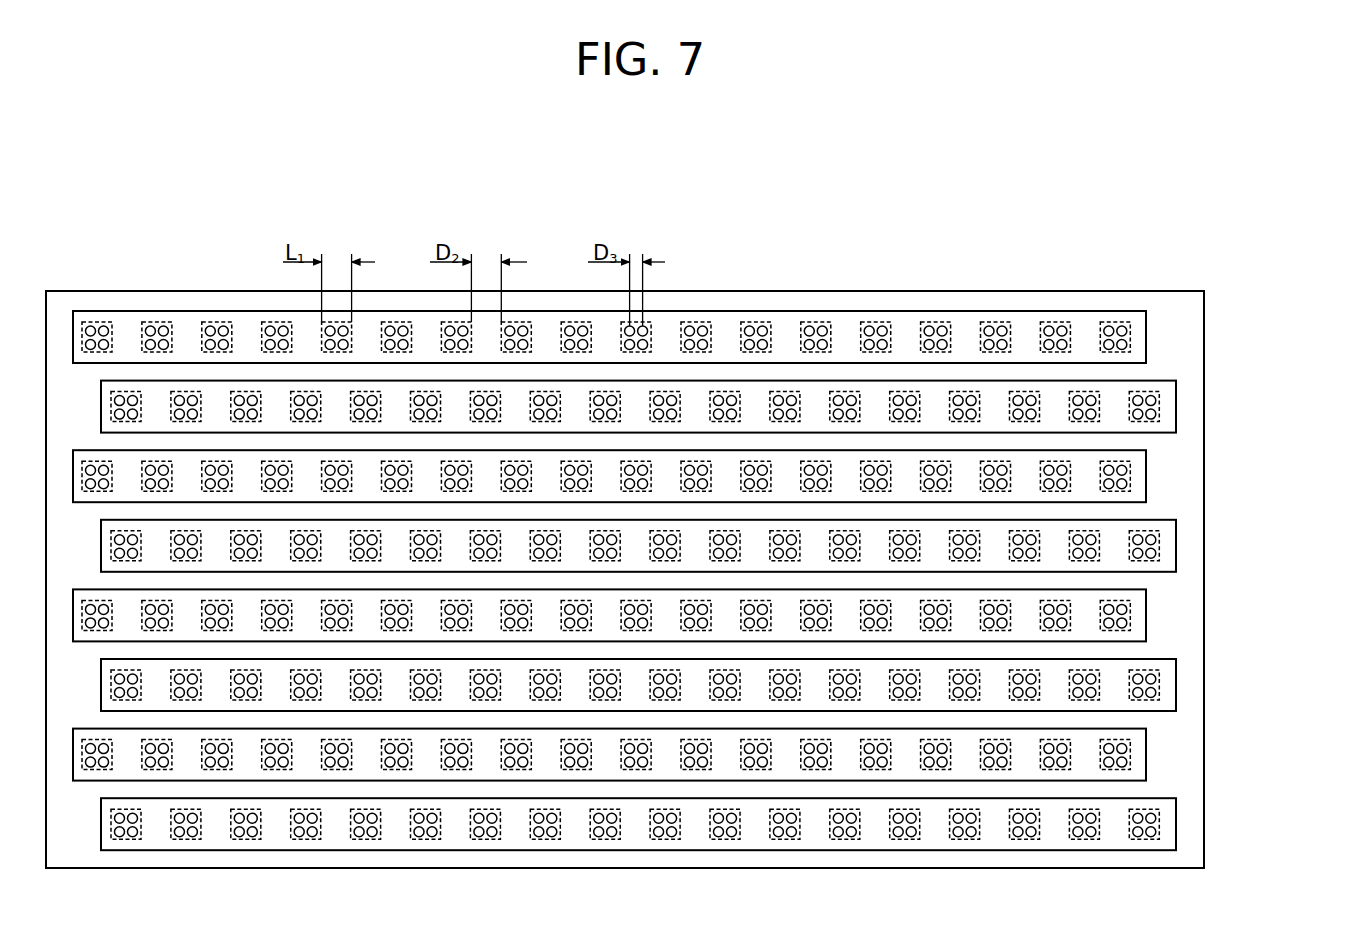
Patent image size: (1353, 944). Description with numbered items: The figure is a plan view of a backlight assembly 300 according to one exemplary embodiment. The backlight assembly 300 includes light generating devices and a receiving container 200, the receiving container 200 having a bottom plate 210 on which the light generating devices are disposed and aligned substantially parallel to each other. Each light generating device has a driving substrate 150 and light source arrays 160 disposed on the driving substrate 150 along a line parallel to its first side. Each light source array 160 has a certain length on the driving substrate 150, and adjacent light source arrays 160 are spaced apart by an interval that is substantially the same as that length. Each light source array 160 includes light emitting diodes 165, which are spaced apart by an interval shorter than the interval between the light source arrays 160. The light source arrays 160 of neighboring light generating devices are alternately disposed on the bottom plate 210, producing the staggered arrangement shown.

The driving substrate 150 is at (215, 322).
The light source array 160 is at (98, 323).
The light emitting diode 165 is at (107, 327).
The receiving container 200 is at (1222, 575).
The bottom plate 210 is at (1204, 607).
The backlight assembly 300 is at (865, 276).